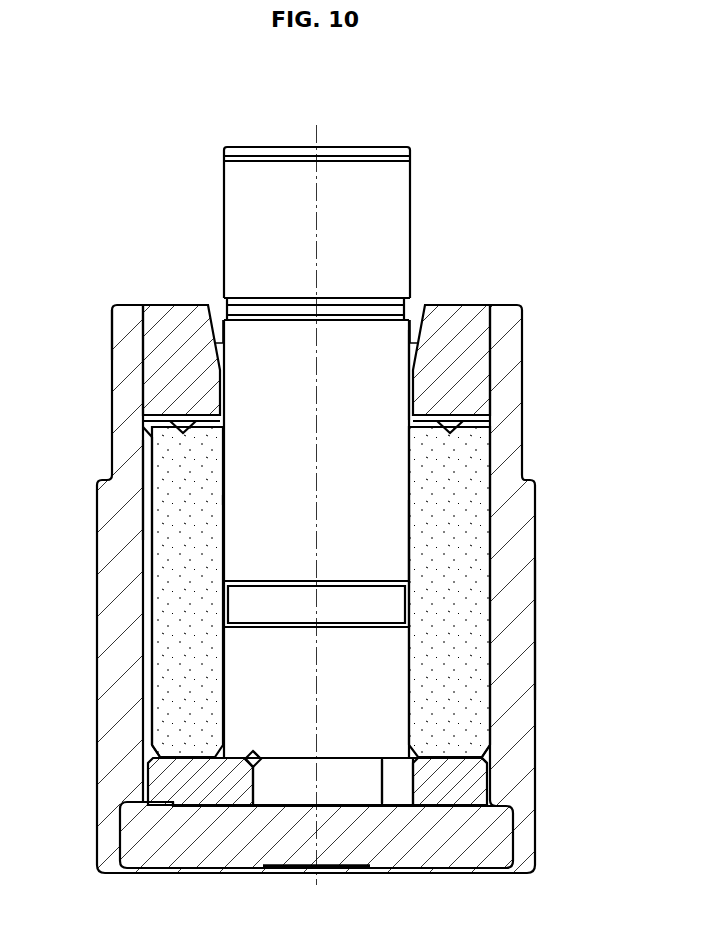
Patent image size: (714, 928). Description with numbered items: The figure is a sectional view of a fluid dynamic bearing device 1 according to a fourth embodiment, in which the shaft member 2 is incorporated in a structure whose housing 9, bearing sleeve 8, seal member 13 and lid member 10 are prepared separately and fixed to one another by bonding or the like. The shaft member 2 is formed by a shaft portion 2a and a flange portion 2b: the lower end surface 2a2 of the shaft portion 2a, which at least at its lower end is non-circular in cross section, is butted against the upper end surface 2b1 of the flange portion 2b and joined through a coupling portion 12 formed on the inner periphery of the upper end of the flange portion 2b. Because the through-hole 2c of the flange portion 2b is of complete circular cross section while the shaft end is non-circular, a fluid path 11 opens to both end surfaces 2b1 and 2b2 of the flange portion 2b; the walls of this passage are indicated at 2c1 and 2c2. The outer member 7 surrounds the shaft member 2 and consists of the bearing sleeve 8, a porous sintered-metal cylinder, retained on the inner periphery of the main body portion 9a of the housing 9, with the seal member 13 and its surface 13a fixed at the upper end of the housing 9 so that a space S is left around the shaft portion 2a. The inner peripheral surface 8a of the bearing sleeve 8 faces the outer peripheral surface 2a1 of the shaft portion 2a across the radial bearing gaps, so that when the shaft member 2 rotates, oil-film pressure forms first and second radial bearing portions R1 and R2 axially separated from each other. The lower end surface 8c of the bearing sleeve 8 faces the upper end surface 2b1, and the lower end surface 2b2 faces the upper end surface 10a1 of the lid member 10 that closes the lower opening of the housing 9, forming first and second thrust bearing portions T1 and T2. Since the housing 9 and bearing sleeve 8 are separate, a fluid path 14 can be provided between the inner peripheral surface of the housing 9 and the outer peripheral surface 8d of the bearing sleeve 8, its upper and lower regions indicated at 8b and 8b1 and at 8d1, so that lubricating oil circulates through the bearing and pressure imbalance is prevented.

The fluid dynamic bearing device 1 is at (548, 268).
The shaft member 2 is at (324, 511).
The shaft portion 2a is at (357, 190).
The outer peripheral surface of the shaft portion 2a1 is at (413, 388).
The lower end surface of the shaft portion 2a2 is at (291, 760).
The flange portion 2b is at (377, 816).
The upper end surface of the flange portion 2b1 is at (466, 765).
The lower end surface of the flange portion 2b2 is at (448, 812).
The through-hole 2c is at (254, 788).
The groove side wall 2c1 is at (258, 752).
The groove side wall 2c2 is at (404, 797).
The outer member 7 is at (111, 330).
The bearing sleeve 8 is at (312, 583).
The inner peripheral surface of the bearing sleeve 8a is at (400, 545).
The seal upper lip 8b is at (435, 420).
The upper lip end portion 8b1 is at (180, 417).
The lower end surface of the bearing sleeve 8c is at (480, 772).
The outer peripheral surface of the bearing sleeve 8d is at (150, 583).
The outer peripheral lower end 8d1 is at (150, 630).
The housing 9 is at (312, 589).
The main body portion 9a is at (512, 620).
The lid member 10 is at (316, 862).
The upper end surface of the lid member 10a1 is at (358, 800).
The fluid path 11 is at (398, 773).
The coupling portion 12 is at (170, 752).
The seal member 13 is at (183, 335).
The guide ring 13a is at (428, 322).
The fluid path 14 is at (143, 488).
The clearance space S is at (219, 332).
The first radial bearing portion R1 is at (222, 500).
The second radial bearing portion R2 is at (222, 695).
The first thrust bearing portion T1 is at (246, 752).
The second thrust bearing portion T2 is at (203, 808).